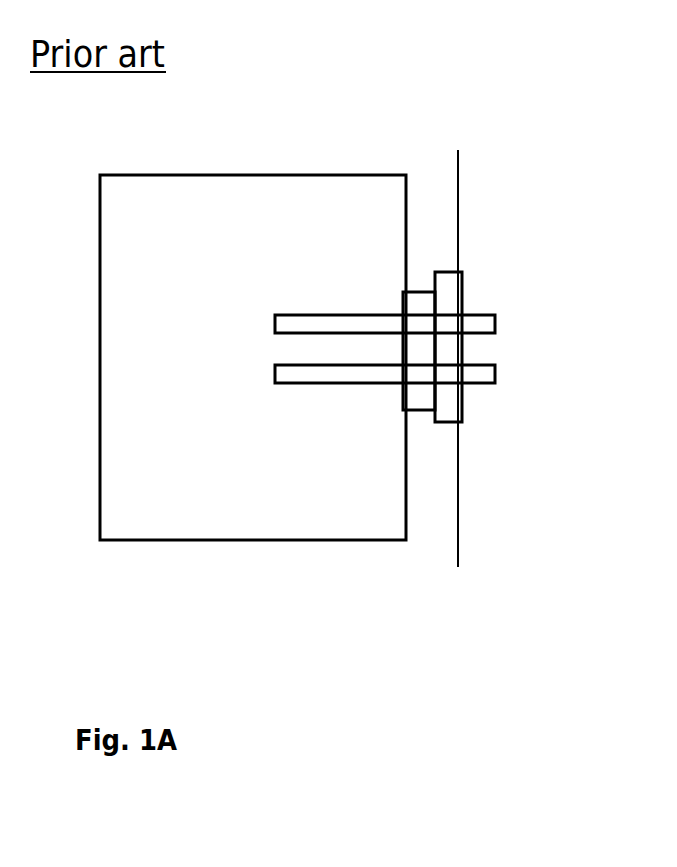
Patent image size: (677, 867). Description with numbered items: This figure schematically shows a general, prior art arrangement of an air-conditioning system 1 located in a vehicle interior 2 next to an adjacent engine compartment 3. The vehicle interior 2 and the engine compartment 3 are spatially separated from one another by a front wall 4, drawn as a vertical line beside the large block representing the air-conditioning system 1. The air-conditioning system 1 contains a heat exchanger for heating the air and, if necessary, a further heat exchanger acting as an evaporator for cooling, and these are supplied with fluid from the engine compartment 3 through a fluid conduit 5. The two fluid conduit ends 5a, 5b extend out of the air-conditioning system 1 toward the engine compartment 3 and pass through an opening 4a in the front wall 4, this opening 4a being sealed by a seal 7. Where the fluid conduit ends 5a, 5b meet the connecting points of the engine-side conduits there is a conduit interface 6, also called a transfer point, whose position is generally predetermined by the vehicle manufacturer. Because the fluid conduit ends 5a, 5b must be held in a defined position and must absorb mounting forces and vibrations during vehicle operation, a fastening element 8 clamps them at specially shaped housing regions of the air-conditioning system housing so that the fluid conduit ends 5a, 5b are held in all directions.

The air-conditioning system 1 is at (345, 187).
The vehicle interior 2 is at (438, 203).
The engine compartment 3 is at (475, 203).
The front wall 4 is at (458, 150).
The opening 4a is at (468, 394).
The fluid conduit 5 is at (365, 328).
The fluid conduit end 5a is at (482, 313).
The fluid conduit end 5b is at (494, 376).
The conduit interface 6 is at (493, 371).
The seal 7 is at (452, 390).
The fastening element 8 is at (418, 353).